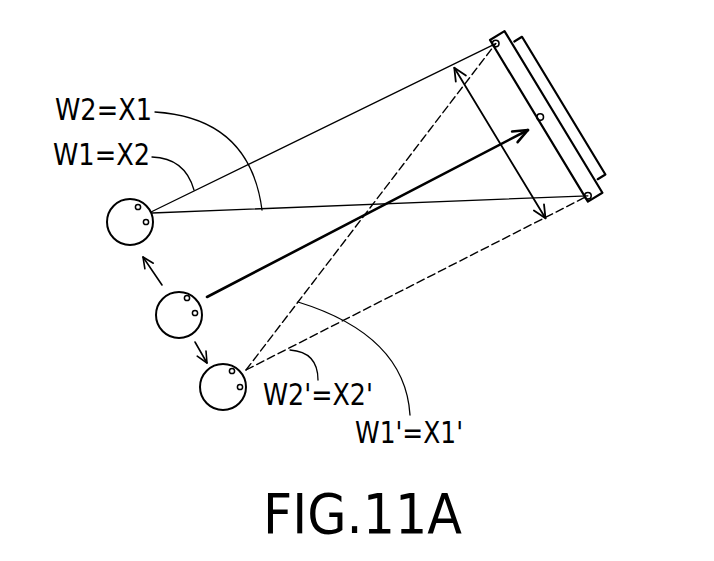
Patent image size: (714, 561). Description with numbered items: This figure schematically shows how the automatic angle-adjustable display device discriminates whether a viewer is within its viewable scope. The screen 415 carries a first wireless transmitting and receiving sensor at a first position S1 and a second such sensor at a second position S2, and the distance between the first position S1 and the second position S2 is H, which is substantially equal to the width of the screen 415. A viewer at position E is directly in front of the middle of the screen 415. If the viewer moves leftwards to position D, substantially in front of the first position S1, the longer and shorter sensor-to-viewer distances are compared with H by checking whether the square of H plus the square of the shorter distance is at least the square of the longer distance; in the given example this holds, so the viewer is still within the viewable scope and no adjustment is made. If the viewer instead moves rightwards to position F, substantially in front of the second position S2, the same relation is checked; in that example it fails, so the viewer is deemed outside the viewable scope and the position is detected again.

The screen 415 is at (578, 170).
The first position S1 is at (494, 23).
The second position S2 is at (605, 218).
The position D is at (115, 228).
The position E is at (163, 322).
The position F is at (210, 397).
The distance between the first position and the second position H is at (518, 176).